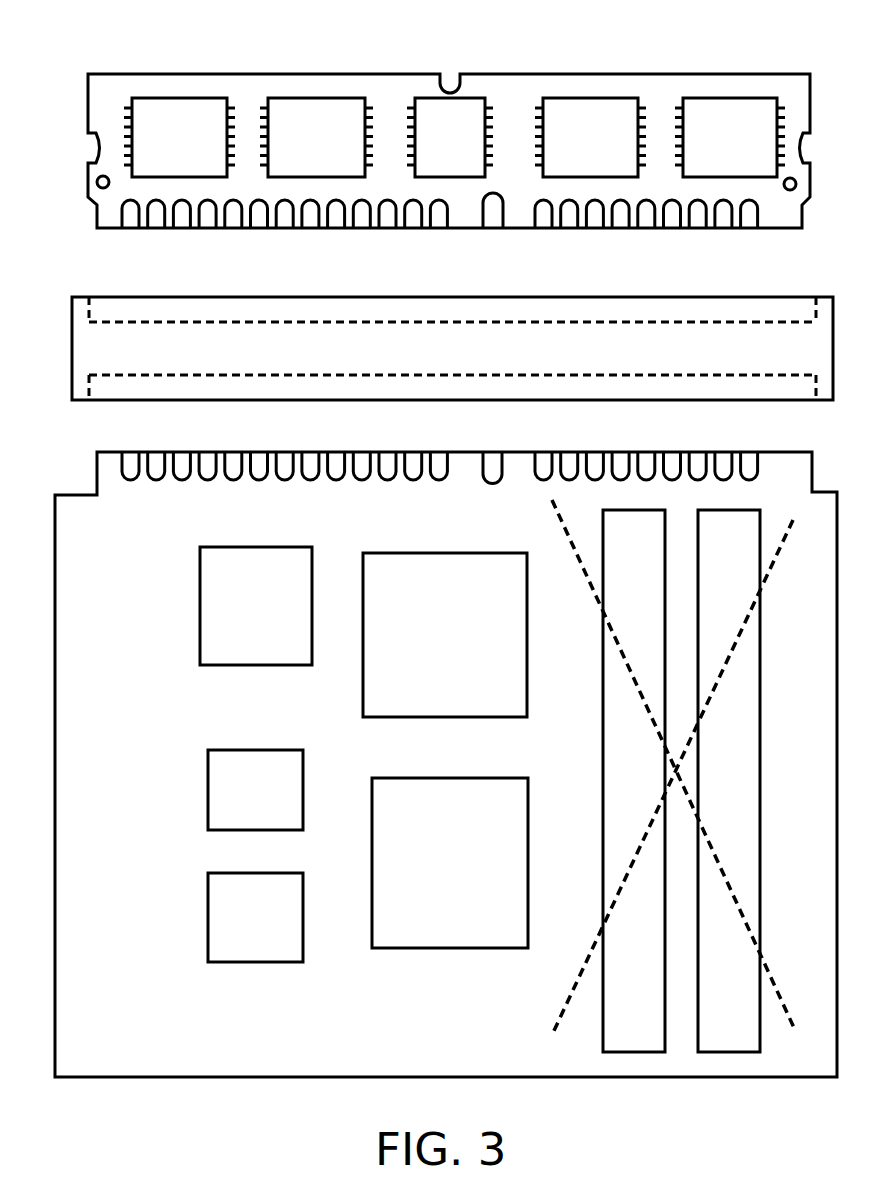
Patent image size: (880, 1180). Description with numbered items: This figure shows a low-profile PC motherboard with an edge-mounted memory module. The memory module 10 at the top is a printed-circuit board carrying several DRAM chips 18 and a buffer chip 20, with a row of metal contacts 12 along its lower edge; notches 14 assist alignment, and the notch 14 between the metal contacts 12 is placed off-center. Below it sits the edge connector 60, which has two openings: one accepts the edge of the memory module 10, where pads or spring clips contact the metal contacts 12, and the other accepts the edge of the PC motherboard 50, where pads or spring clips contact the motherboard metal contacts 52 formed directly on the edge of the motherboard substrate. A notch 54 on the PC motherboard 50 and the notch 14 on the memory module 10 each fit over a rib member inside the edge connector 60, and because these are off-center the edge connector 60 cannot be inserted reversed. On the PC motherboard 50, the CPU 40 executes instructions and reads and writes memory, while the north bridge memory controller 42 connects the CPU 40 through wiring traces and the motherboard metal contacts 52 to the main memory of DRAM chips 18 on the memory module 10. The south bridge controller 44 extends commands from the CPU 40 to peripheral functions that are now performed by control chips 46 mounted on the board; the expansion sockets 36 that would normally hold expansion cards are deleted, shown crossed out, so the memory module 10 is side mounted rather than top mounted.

The memory module 10 is at (499, 108).
The metal contacts 12 is at (338, 220).
The notches 14 is at (447, 84).
The DRAM chips 18 is at (168, 162).
The buffer chip 20 is at (437, 162).
The expansion sockets 36 is at (620, 809).
The central processing unit 40 is at (261, 646).
The north bridge memory controller 42 is at (466, 692).
The south bridge controller 44 is at (460, 927).
The control chips 46 is at (244, 799).
The PC motherboard 50 is at (106, 776).
The motherboard metal contacts 52 is at (392, 480).
The notch 54 is at (497, 484).
The edge connector 60 is at (184, 361).